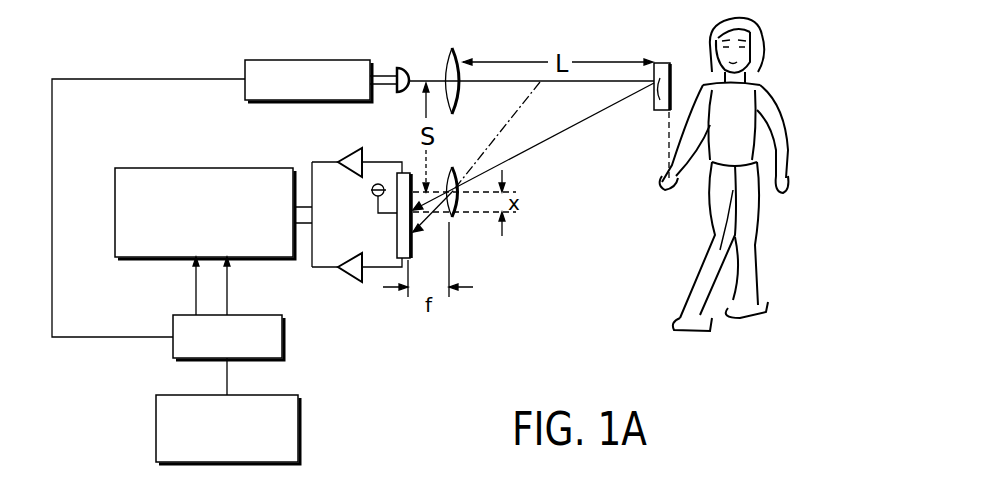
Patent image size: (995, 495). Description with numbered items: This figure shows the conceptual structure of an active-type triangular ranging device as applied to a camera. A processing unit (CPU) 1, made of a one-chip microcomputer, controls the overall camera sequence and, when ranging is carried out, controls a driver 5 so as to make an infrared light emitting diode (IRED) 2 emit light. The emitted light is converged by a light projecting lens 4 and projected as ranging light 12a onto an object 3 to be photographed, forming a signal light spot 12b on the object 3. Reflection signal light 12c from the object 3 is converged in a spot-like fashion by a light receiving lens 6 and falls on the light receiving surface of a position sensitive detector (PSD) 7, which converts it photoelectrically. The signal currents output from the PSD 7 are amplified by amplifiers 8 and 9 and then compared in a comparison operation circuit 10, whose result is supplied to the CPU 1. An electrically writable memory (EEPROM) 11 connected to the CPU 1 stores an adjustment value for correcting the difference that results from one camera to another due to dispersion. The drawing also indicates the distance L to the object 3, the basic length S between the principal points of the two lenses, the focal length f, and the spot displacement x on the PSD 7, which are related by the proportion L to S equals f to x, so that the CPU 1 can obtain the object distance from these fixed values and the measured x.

The processing unit (CPU) 1 is at (282, 335).
The infrared light emitting diode (IRED) 2 is at (403, 68).
The object 3 is at (767, 38).
The light projecting lens 4 is at (457, 50).
The driver 5 is at (311, 60).
The light receiving lens 6 is at (456, 216).
The position sensitive detector (PSD) 7 is at (396, 240).
The amplifier 8 is at (345, 150).
The amplifier 9 is at (346, 280).
The comparison operation circuit 10 is at (215, 168).
The electrically writable memory (EEPROM) 11 is at (298, 423).
The ranging light 12a is at (572, 84).
The signal light spot 12b is at (650, 102).
The reflection signal light 12c is at (539, 146).